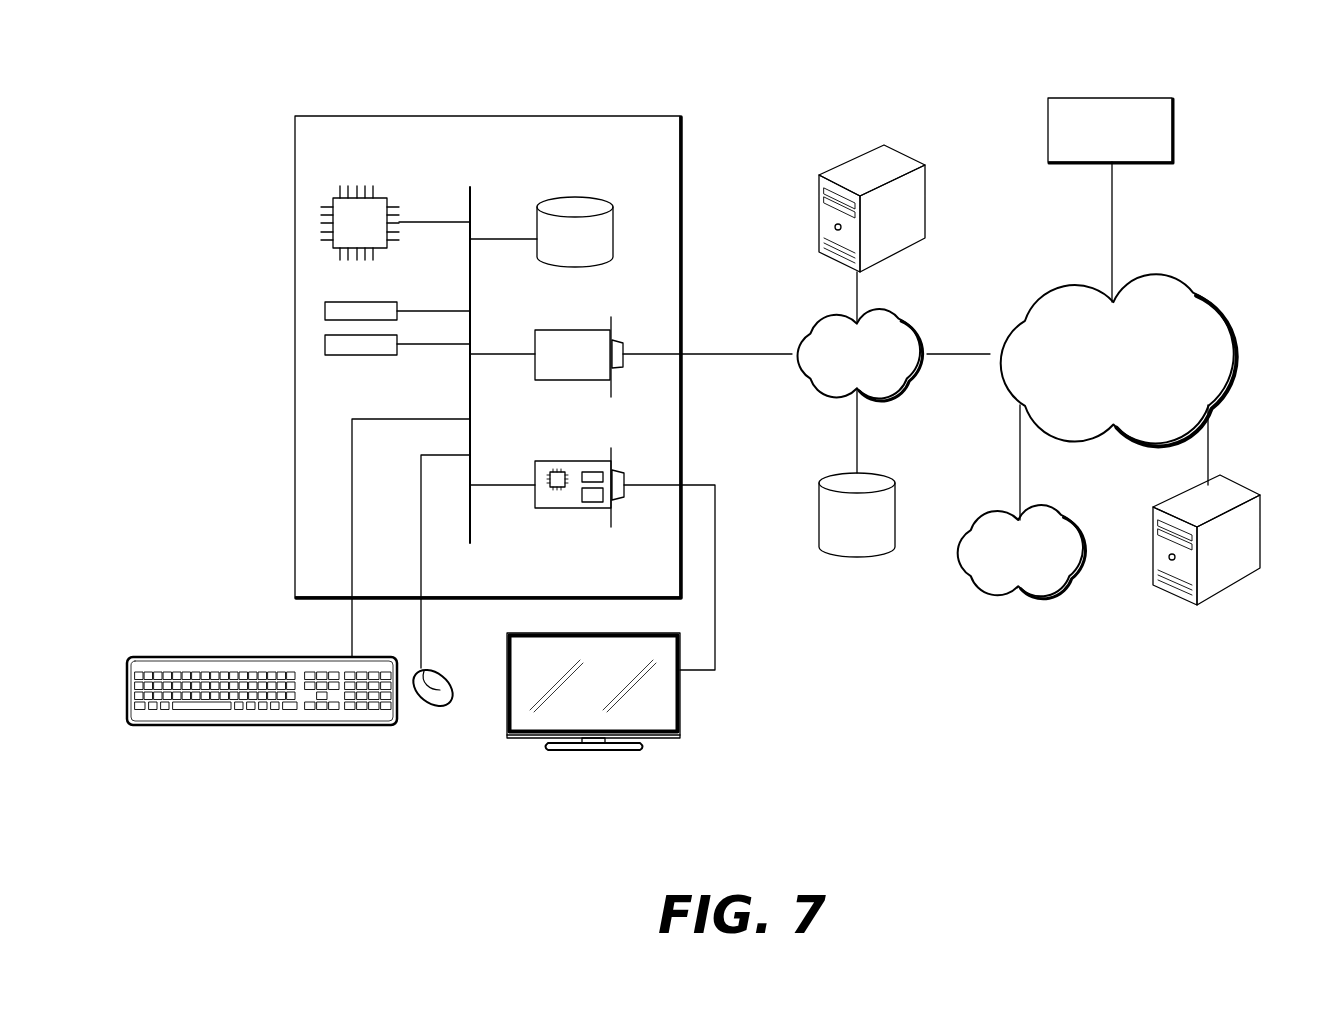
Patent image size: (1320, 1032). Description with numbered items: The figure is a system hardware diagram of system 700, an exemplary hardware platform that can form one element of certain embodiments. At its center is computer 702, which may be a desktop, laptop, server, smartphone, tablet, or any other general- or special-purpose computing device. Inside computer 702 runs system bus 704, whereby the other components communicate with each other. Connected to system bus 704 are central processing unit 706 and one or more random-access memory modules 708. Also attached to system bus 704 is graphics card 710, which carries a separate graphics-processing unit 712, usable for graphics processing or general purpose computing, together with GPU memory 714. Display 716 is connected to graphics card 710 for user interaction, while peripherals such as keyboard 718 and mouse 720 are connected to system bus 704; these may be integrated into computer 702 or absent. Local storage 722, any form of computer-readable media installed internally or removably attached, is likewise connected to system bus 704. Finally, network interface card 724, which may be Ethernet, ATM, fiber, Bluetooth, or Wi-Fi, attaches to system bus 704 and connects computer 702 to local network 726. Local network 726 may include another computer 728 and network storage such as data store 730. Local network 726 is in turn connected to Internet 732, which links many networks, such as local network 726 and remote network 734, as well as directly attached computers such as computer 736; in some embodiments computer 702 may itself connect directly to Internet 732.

The system 700 is at (792, 79).
The computer 702 is at (640, 116).
The system bus 704 is at (471, 190).
The central processing unit 706 is at (387, 194).
The random-access memory modules 708 is at (398, 305).
The graphics card 710 is at (535, 475).
The graphics-processing unit 712 is at (556, 488).
The GPU memory 714 is at (592, 502).
The display 716 is at (680, 723).
The keyboard 718 is at (295, 725).
The mouse 720 is at (430, 708).
The local storage 722 is at (613, 216).
The network interface card 724 is at (535, 331).
The local network 726 is at (898, 318).
The computer 728 is at (905, 153).
The data store 730 is at (886, 472).
The Internet 732 is at (1160, 283).
The remote network 734 is at (1073, 530).
The computer 736 is at (1243, 485).